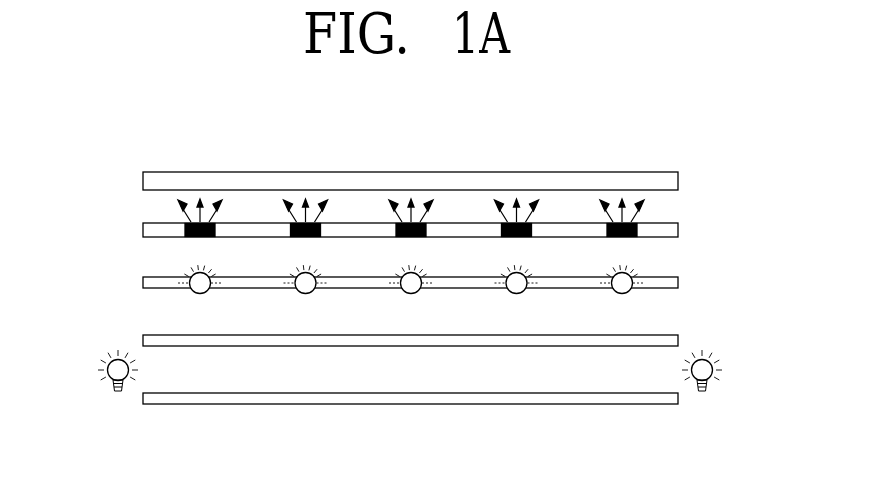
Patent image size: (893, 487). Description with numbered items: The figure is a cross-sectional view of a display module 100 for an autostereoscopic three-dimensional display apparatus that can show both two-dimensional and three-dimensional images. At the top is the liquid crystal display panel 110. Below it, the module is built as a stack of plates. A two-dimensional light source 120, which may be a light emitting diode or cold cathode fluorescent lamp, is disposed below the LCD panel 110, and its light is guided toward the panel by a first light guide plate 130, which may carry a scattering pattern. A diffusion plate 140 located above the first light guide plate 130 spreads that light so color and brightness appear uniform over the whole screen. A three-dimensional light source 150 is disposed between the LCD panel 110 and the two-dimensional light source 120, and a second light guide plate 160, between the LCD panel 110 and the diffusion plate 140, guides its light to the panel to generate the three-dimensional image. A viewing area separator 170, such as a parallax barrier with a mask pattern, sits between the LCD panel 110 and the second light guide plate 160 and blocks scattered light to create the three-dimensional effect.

The display module 100 is at (422, 118).
The liquid crystal display (LCD) panel 110 is at (679, 181).
The 2D light source 120 is at (106, 370).
The first light guide plate 130 is at (662, 405).
The diffusion plate 140 is at (679, 341).
The 3D light source 150 is at (629, 276).
The second light guide plate 160 is at (662, 289).
The viewing area separator 170 is at (679, 230).